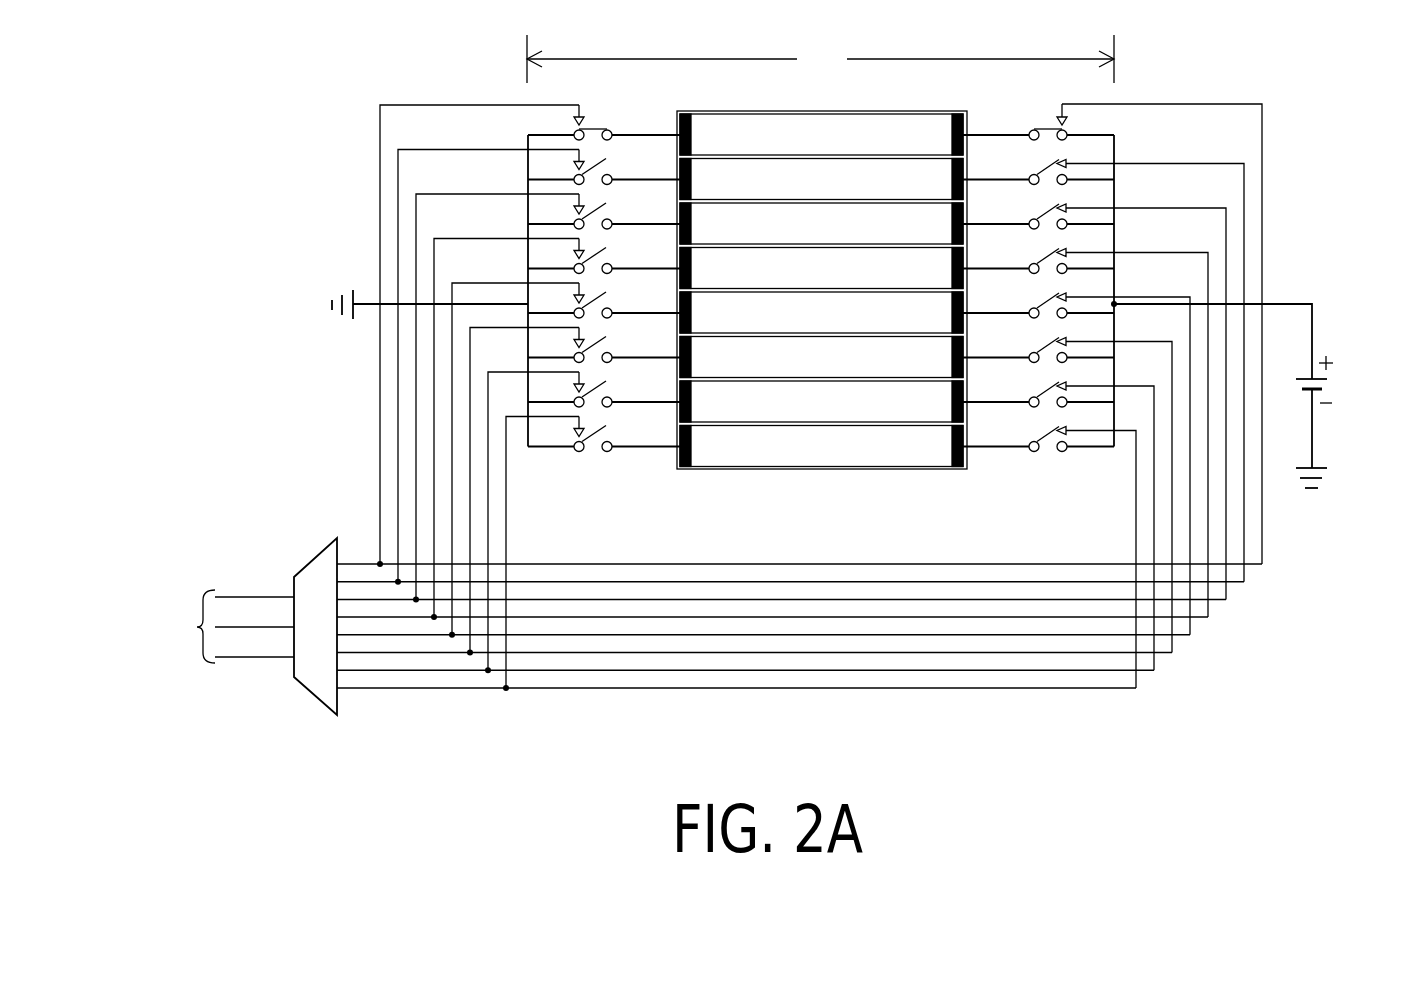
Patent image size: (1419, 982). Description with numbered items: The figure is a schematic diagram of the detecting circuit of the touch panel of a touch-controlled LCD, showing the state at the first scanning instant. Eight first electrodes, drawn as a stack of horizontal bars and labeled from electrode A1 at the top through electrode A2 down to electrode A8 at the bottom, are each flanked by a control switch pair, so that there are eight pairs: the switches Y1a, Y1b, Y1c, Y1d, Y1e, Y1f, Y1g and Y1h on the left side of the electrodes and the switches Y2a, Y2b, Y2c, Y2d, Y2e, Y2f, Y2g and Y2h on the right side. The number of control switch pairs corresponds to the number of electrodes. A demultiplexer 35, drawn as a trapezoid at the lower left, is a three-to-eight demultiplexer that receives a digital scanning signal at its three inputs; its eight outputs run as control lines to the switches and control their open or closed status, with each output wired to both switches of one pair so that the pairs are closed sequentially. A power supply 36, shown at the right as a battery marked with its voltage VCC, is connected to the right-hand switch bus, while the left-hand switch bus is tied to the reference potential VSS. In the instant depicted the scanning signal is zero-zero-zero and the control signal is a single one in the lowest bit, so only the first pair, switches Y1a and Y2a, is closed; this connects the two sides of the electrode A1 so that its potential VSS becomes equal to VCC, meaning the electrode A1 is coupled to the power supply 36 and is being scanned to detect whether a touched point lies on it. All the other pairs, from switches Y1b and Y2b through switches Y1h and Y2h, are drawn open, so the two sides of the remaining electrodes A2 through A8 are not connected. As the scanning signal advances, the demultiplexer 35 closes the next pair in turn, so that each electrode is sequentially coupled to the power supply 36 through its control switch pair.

The demultiplexer 35 is at (316, 554).
The power supply 36 is at (1258, 396).
The electric potential on the electrode VSS is at (820, 59).
The power supply voltage VCC is at (1379, 387).
The electrode A1 is at (821, 134).
The electrode A2 is at (821, 179).
The electrode A8 is at (821, 446).
The control switch Y1a is at (530, 334).
The control switch Y1b is at (539, 366).
The control switch Y1c is at (548, 396).
The control switch Y1d is at (557, 428).
The control switch Y1e is at (566, 459).
The control switch Y1f is at (575, 490).
The control switch Y1g is at (584, 521).
The control switch Y1h is at (593, 552).
The control switch Y2a is at (1112, 334).
The control switch Y2b is at (1103, 366).
The control switch Y2c is at (1094, 397).
The control switch Y2d is at (1085, 429).
The control switch Y2e is at (1076, 459).
The control switch Y2f is at (1067, 491).
The control switch Y2g is at (1058, 521).
The control switch Y2h is at (1049, 553).